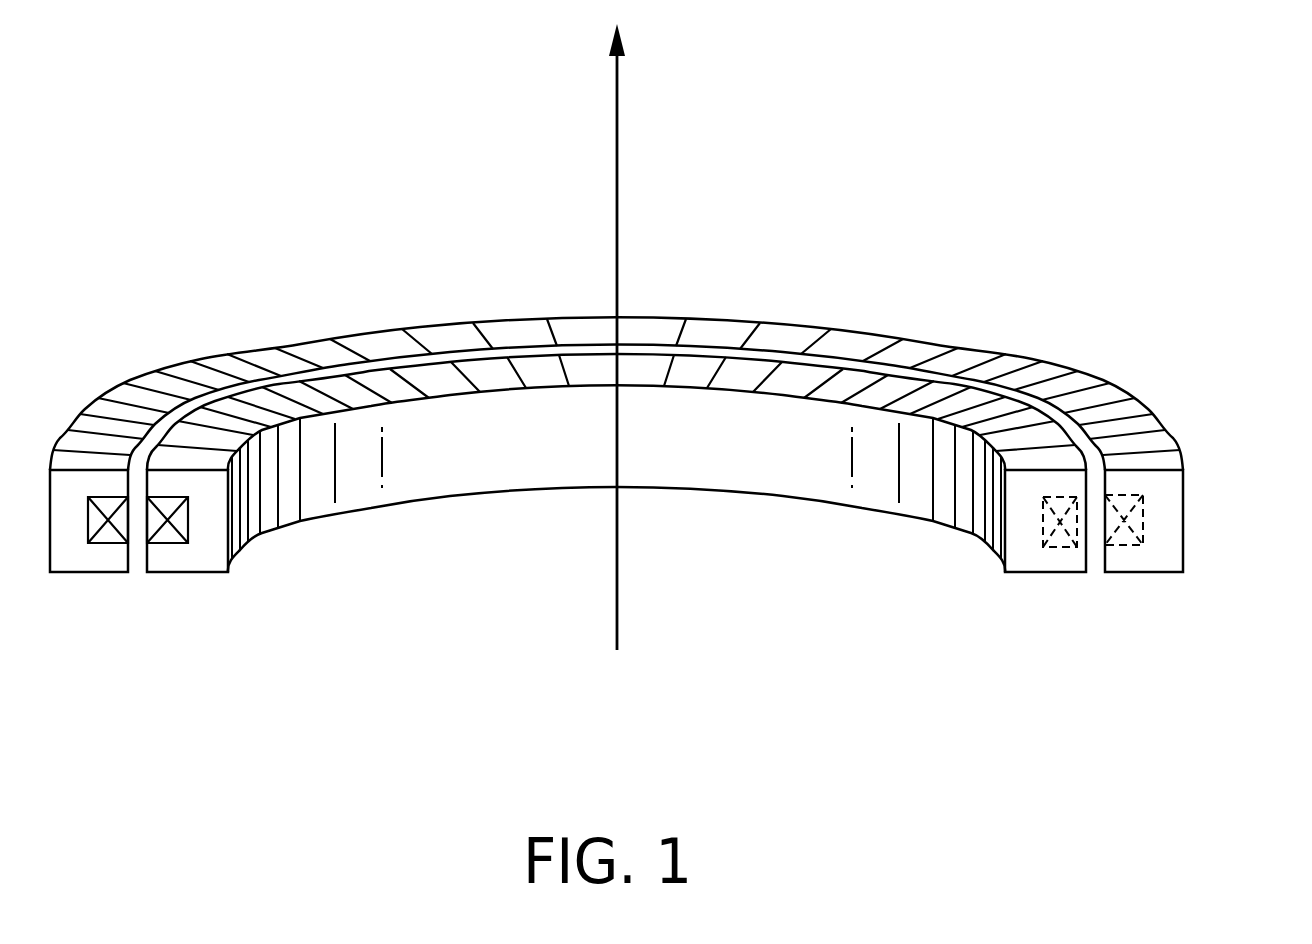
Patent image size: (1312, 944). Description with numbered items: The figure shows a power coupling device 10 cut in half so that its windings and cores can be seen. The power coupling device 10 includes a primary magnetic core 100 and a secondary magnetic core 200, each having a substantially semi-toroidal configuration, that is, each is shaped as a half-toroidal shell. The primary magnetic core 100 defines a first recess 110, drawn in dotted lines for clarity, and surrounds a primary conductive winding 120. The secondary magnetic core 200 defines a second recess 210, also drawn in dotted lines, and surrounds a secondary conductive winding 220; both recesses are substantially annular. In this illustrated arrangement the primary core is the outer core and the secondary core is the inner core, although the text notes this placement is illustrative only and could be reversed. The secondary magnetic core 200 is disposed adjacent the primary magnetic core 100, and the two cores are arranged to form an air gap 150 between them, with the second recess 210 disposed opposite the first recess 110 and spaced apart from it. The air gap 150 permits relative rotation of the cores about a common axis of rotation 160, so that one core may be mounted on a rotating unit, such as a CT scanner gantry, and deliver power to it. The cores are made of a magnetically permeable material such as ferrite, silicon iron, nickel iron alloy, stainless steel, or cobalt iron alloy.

The power coupling device 10 is at (576, 684).
The primary magnetic core 100 is at (1028, 500).
The first recess 110 is at (1060, 548).
The primary conductive winding 120 is at (168, 535).
The air gap 150 is at (708, 350).
The axis of rotation 160 is at (617, 143).
The secondary magnetic core 200 is at (1155, 555).
The second recess 210 is at (1143, 522).
The secondary conductive winding 220 is at (110, 535).